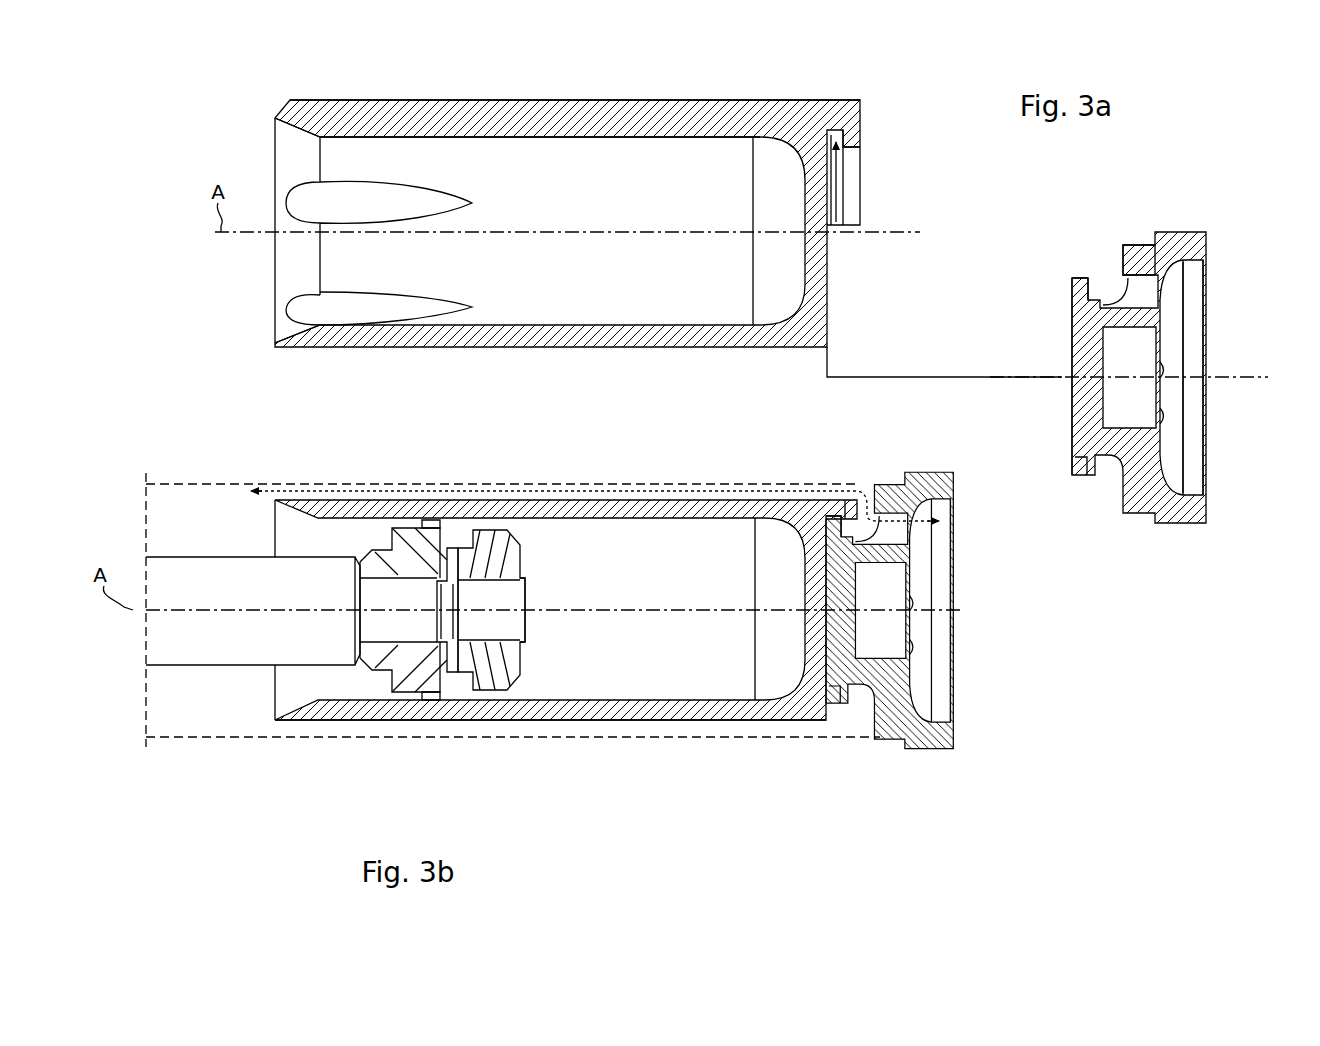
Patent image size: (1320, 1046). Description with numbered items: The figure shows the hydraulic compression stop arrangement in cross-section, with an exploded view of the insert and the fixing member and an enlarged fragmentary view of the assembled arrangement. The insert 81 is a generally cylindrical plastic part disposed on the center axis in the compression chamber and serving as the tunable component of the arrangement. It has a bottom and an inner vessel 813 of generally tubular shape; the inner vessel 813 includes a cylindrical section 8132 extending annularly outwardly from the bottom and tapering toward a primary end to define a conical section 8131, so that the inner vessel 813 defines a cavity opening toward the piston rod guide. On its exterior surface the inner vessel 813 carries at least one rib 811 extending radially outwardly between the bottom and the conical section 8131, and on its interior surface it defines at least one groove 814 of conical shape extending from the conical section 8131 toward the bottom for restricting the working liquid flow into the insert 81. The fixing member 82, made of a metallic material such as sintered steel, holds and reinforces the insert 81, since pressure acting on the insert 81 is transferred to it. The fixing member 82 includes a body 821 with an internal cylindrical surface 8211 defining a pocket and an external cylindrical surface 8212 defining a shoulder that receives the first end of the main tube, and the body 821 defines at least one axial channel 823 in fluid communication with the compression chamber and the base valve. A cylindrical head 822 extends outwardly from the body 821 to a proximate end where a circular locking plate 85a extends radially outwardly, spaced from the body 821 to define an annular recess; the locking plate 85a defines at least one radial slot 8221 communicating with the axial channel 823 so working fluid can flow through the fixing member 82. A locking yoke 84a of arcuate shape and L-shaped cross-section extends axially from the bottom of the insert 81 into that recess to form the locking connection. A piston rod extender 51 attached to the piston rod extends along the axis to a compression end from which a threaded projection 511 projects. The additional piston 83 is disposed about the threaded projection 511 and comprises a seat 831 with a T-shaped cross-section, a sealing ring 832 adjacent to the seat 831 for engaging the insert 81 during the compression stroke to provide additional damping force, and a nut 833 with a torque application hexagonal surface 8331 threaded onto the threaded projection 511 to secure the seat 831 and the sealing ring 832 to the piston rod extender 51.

In FIG. 3a, the insert 81 is at (499, 358).
In FIG. 3b, the insert 81 is at (632, 724).
In FIG. 3b, the rib 811 is at (779, 727).
In FIG. 3a, the inner vessel 813 is at (596, 277).
In FIG. 3b, the inner vessel 813 is at (681, 688).
In FIG. 3a, the conical section 8131 is at (292, 112).
In FIG. 3a, the cylindrical section 8132 is at (549, 118).
In FIG. 3a, the groove 814 is at (353, 305).
In FIG. 3a, the locking yoke 84a is at (833, 117).
In FIG. 3b, the locking yoke 84a is at (834, 505).
In FIG. 3a, the fixing member 82 is at (1186, 222).
In FIG. 3b, the fixing member 82 is at (897, 750).
In FIG. 3a, the body 821 is at (1203, 243).
In FIG. 3a, the internal cylindrical surface 8211 is at (1188, 258).
In FIG. 3a, the external cylindrical surface 8212 is at (1142, 243).
In FIG. 3a, the head 822 is at (1070, 333).
In FIG. 3a, the radial slot 8221 is at (1080, 462).
In FIG. 3a, the axial channel 823 is at (1163, 418).
In FIG. 3a, the locking plate 85a is at (1072, 285).
In FIG. 3b, the locking plate 85a is at (834, 695).
In FIG. 3b, the piston rod extender 51 is at (223, 648).
In FIG. 3b, the threaded projection 511 is at (383, 627).
In FIG. 3b, the additional piston 83 is at (377, 695).
In FIG. 3b, the seat 831 is at (415, 677).
In FIG. 3b, the sealing ring 832 is at (437, 690).
In FIG. 3b, the nut 833 is at (490, 663).
In FIG. 3b, the torque application hexagonal surface 8331 is at (500, 687).